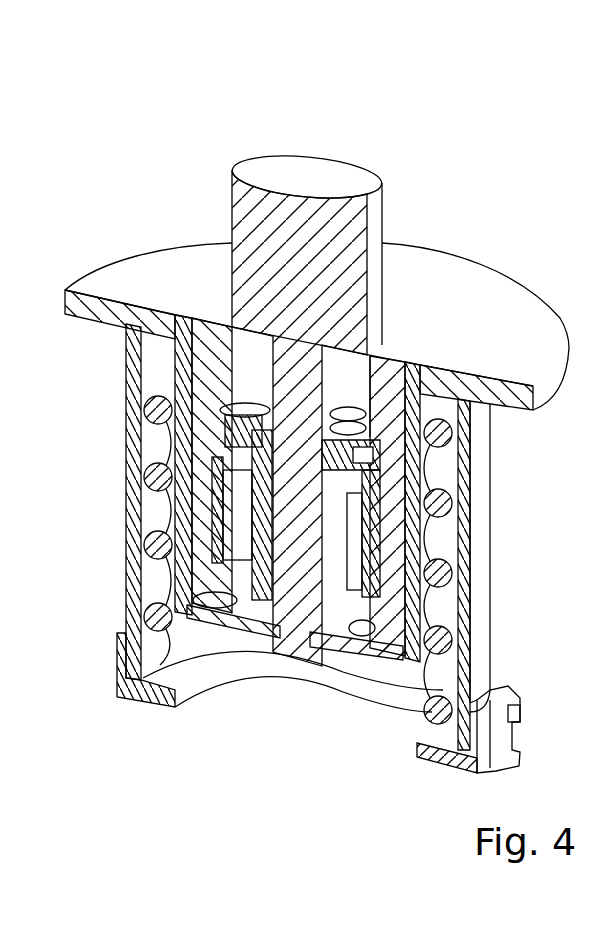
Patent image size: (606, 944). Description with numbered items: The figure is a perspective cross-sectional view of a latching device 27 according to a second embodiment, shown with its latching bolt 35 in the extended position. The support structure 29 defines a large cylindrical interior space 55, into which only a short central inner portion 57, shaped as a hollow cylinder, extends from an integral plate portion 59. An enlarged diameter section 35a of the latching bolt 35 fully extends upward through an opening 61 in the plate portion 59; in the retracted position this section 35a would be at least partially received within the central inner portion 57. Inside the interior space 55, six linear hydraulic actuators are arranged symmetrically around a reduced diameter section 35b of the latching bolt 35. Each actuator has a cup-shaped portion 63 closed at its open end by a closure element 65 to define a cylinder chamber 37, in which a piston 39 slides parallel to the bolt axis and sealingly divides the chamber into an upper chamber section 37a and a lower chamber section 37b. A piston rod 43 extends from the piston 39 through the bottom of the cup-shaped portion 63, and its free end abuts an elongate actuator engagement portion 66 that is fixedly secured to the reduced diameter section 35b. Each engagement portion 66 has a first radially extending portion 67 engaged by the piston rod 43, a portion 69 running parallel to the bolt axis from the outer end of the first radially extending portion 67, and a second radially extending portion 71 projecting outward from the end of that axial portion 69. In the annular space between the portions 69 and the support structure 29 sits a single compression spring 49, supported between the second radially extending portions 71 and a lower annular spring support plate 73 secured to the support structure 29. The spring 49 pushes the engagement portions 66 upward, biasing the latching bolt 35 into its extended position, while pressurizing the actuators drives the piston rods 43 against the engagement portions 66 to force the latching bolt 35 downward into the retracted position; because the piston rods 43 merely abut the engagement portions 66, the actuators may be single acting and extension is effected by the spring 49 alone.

The latching device 27 is at (192, 128).
The support structure 29 is at (490, 512).
The latching bolt 35 is at (355, 220).
The enlarged diameter section 35a is at (222, 205).
The reduced diameter section 35b is at (338, 668).
The cylinder chamber 37 is at (213, 498).
The chamber section 37a is at (212, 458).
The chamber section 37b is at (220, 511).
The piston 39 is at (380, 486).
The piston rod 43 is at (432, 565).
The compression spring 49 is at (140, 412).
The interior space 55 is at (158, 652).
The central inner portion 57 is at (195, 373).
The plate portion 59 is at (517, 303).
The opening 61 is at (385, 357).
The cup-shaped portion 63 is at (392, 536).
The cap 65 is at (378, 455).
The actuator engagement portion 66 is at (257, 630).
The first radially extending portion 67 is at (200, 618).
The portion extending parallel to the longitudinal axis 69 is at (152, 578).
The second radially extending portion 71 is at (150, 335).
The lower annular spring support plate 73 is at (157, 708).